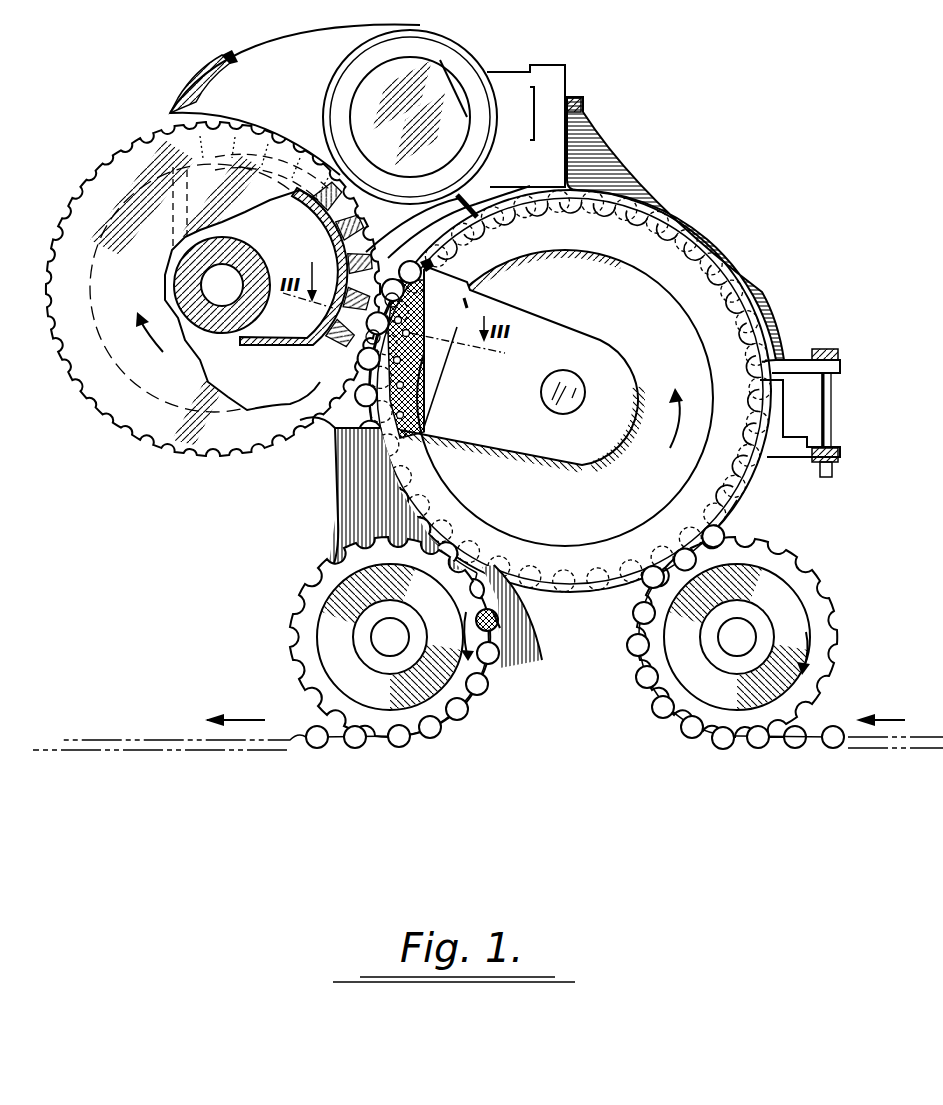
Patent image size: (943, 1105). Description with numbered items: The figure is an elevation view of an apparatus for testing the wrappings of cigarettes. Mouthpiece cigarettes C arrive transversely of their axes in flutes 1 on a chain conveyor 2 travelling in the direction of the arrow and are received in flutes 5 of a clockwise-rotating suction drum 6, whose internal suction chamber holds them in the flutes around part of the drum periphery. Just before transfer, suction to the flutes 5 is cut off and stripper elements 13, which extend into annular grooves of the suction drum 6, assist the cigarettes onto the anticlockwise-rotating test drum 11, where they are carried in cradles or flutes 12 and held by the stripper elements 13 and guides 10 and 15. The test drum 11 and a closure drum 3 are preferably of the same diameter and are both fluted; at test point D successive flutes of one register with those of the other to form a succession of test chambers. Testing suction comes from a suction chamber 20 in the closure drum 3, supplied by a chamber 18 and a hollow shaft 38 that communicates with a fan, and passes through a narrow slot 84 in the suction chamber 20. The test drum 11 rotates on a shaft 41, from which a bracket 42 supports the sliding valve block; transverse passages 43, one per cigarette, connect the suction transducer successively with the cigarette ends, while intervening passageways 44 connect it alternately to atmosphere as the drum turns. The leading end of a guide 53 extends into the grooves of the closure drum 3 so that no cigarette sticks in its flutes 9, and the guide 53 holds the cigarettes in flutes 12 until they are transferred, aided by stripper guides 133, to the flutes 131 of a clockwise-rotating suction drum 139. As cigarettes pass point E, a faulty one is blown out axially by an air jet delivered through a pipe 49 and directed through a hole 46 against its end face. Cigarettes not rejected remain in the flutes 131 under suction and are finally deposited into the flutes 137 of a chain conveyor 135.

The flutes 1 is at (822, 746).
The chain conveyor 2 is at (780, 746).
The closure drum 3 is at (138, 289).
The flutes 5 is at (756, 731).
The suction drum 6 is at (772, 599).
The flutes 9 is at (310, 406).
The guide 10 is at (770, 287).
The test drum 11 is at (656, 329).
The flutes 12 is at (432, 265).
The stripper elements 13 is at (757, 470).
The guide 15 is at (440, 222).
The chamber 18 is at (240, 97).
The suction chamber 20 is at (305, 267).
The hollow shaft 38 is at (426, 98).
The shaft 41 is at (568, 388).
The bracket 42 is at (510, 426).
The transverse passages 43 is at (398, 392).
The passageways 44 is at (414, 328).
The hole 46 is at (474, 618).
The pipe 49 is at (500, 622).
The guide 53 is at (338, 516).
The narrow slot 84 is at (334, 322).
The flutes 131 is at (298, 658).
The stripper guides 133 is at (532, 656).
The chain conveyor 135 is at (250, 740).
The flutes 137 is at (462, 782).
The suction drum 139 is at (372, 692).
The mouthpiece cigarettes C is at (462, 714).
The test point D is at (407, 336).
The reject point E is at (489, 667).